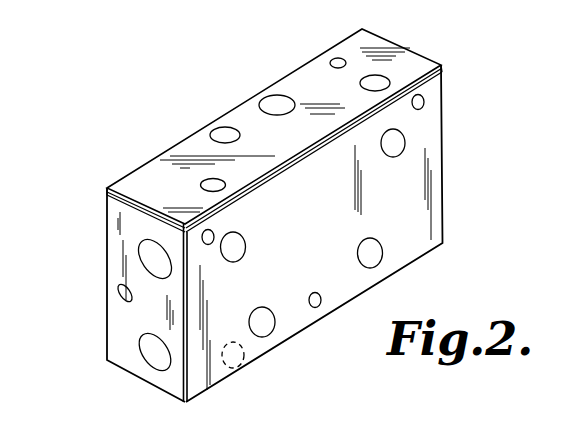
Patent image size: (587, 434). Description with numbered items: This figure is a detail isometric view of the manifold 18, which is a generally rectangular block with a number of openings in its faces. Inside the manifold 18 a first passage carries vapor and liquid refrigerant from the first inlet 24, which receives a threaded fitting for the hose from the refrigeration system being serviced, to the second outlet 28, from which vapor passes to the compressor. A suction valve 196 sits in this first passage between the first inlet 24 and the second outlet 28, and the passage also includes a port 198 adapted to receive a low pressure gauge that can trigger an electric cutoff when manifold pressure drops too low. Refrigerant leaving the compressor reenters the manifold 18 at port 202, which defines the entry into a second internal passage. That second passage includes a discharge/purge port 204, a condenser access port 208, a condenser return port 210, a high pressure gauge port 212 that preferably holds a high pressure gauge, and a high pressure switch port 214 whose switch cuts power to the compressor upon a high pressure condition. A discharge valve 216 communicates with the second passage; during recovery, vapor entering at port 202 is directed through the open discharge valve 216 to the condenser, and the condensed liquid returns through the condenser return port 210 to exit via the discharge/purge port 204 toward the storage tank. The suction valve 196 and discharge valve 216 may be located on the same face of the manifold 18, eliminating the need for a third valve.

The manifold 18 is at (326, 215).
The first inlet 24 is at (383, 252).
The second outlet 28 is at (272, 100).
The suction valve 196 is at (405, 137).
The port 198 is at (385, 78).
The port 202 is at (242, 369).
The discharge/purge port 204 is at (268, 330).
The condenser access port 208 is at (218, 129).
The condenser return port 210 is at (145, 350).
The high pressure gauge port 212 is at (212, 182).
The high pressure switch port 214 is at (120, 292).
The discharge valve 216 is at (232, 247).